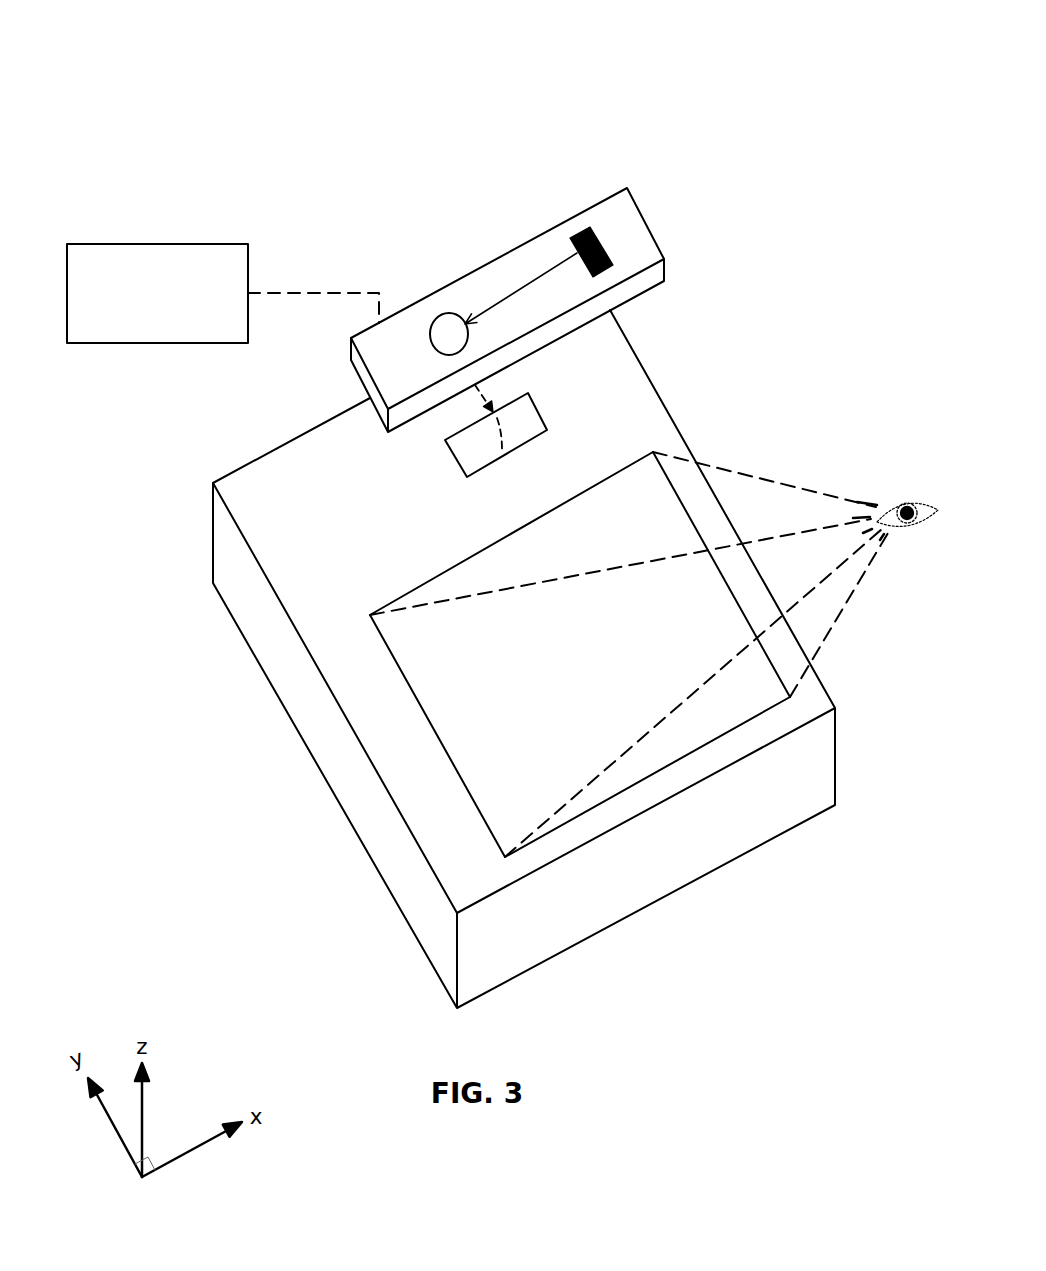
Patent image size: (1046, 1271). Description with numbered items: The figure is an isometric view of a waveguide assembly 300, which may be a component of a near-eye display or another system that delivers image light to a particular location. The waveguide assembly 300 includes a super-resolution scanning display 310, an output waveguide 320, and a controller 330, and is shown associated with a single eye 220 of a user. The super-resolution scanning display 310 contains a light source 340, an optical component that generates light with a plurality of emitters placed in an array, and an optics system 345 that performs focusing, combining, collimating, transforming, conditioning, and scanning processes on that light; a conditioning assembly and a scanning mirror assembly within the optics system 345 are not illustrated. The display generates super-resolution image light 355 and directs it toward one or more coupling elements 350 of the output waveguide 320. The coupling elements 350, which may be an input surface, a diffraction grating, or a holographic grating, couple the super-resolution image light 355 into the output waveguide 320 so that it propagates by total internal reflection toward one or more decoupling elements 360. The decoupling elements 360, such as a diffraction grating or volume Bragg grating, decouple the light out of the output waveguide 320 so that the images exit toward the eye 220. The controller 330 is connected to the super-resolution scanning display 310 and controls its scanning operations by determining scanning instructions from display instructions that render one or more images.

The waveguide assembly 300 is at (116, 88).
The super-resolution scanning display 310 is at (653, 238).
The output waveguide 320 is at (373, 770).
The controller 330 is at (138, 318).
The light source 340 is at (588, 237).
The optics system 345 is at (448, 333).
The coupling elements 350 is at (540, 428).
The super-resolution image light 355 is at (535, 407).
The decoupling elements 360 is at (488, 836).
The eye 220 is at (895, 488).